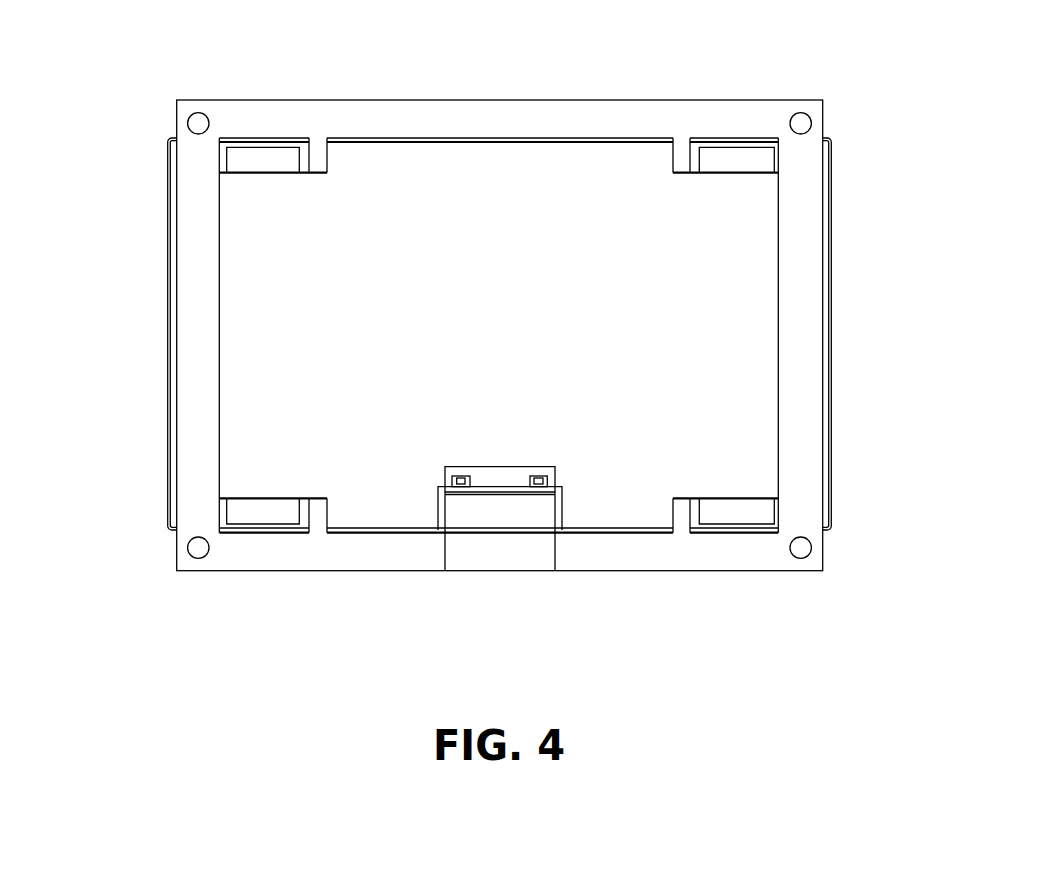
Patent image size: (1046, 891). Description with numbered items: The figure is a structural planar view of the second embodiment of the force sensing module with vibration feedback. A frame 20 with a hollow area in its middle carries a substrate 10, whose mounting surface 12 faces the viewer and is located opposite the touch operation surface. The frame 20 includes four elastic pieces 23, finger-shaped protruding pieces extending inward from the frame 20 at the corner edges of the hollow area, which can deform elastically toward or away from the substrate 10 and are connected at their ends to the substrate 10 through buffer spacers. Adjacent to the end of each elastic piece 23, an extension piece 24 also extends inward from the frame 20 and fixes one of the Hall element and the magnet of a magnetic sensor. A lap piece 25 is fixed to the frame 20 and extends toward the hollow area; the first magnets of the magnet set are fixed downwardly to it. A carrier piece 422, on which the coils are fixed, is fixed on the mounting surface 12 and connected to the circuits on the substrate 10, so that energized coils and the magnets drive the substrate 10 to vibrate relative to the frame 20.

The substrate 10 is at (829, 333).
The mounting surface 12 is at (280, 332).
The frame 20 is at (496, 122).
The elastic piece 23 is at (272, 164).
The extension piece 24 is at (319, 160).
The lap piece 25 is at (497, 542).
The carrier piece 422 is at (553, 468).